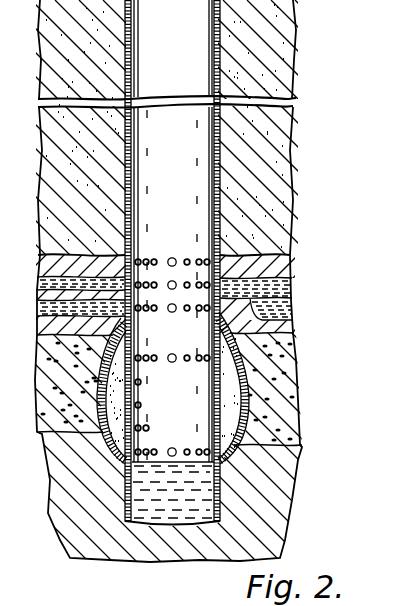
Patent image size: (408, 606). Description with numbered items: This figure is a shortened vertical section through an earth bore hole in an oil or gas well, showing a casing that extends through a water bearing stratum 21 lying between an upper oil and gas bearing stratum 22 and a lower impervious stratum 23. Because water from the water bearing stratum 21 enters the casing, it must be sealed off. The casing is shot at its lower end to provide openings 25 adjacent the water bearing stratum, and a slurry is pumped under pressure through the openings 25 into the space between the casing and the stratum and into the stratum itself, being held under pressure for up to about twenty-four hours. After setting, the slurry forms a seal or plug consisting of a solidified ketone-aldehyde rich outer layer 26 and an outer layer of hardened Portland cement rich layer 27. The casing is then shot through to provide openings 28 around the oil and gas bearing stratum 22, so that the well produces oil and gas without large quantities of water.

The water bearing stratum 21 is at (303, 384).
The upper oil and gas bearing stratum 22 is at (258, 298).
The lower impervious stratum 23 is at (285, 480).
The openings 25 is at (140, 382).
The ketone-aldehyde rich outer layer 26 is at (237, 352).
The Portland cement rich layer 27 is at (238, 370).
The openings 28 is at (170, 257).